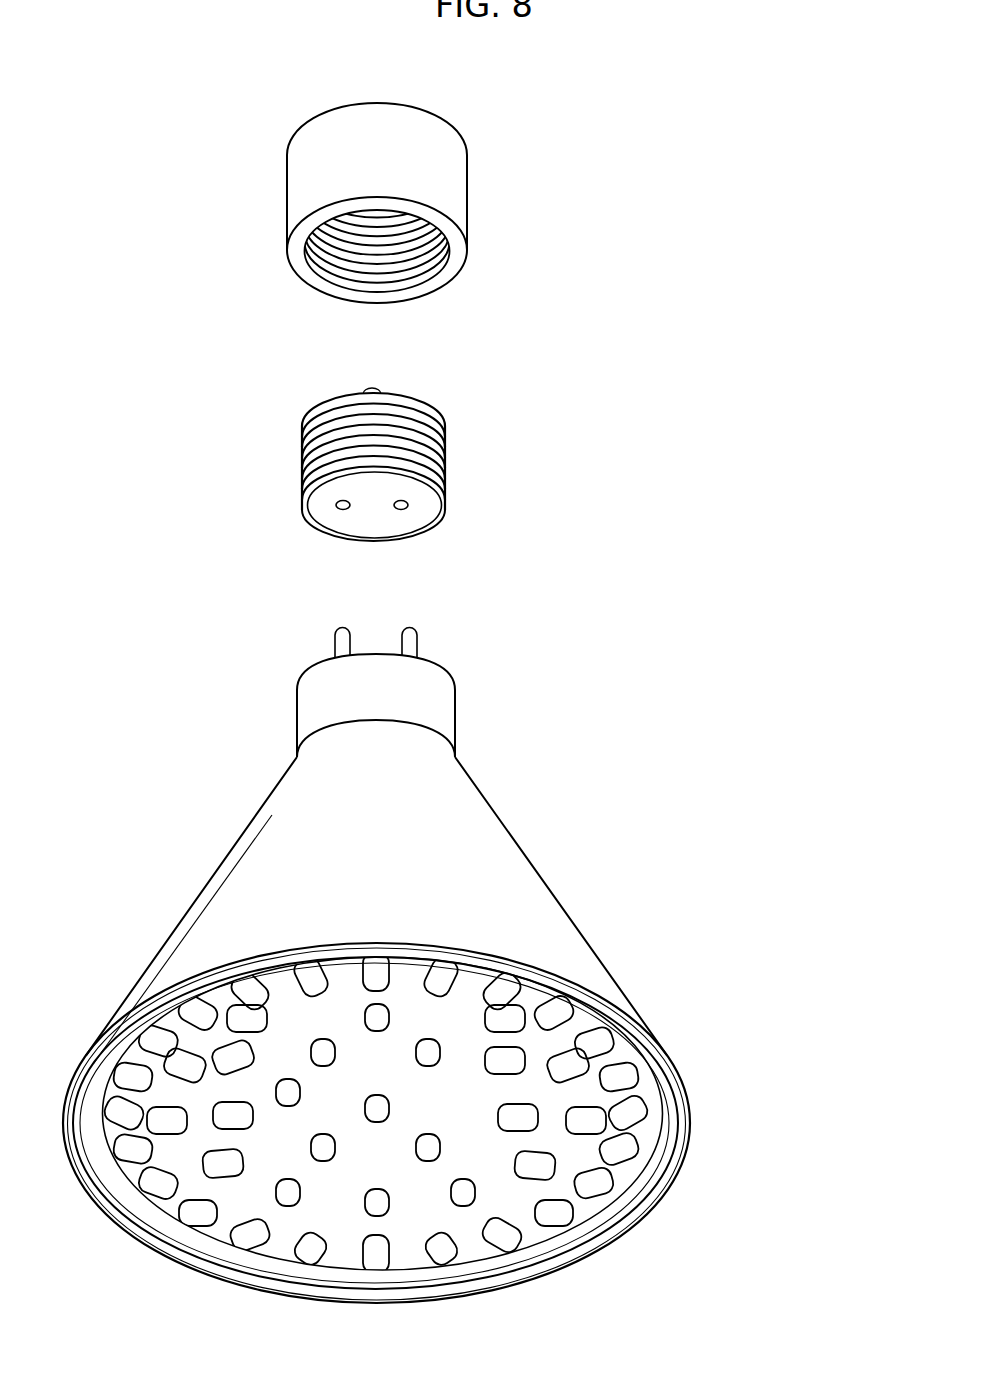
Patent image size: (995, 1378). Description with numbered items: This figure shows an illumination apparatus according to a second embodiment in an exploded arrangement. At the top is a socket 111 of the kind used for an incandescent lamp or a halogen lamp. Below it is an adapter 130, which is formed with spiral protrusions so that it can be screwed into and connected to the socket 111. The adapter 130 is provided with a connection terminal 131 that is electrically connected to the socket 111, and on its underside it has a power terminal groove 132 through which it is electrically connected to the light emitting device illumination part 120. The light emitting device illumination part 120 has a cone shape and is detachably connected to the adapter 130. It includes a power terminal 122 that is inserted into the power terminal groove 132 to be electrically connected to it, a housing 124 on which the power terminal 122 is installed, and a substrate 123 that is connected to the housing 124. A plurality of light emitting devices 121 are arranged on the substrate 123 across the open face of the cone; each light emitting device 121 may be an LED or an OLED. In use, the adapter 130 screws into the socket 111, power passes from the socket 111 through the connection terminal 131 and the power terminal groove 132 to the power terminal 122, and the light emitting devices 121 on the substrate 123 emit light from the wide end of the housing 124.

The socket 111 is at (458, 187).
The light emitting device illumination part 120 is at (455, 965).
The light emitting device 121 is at (627, 1113).
The power terminal 122 is at (413, 643).
The substrate 123 is at (650, 1167).
The housing 124 is at (493, 835).
The adapter 130 is at (439, 476).
The connection terminal 131 is at (372, 388).
The power terminal groove 132 is at (343, 507).